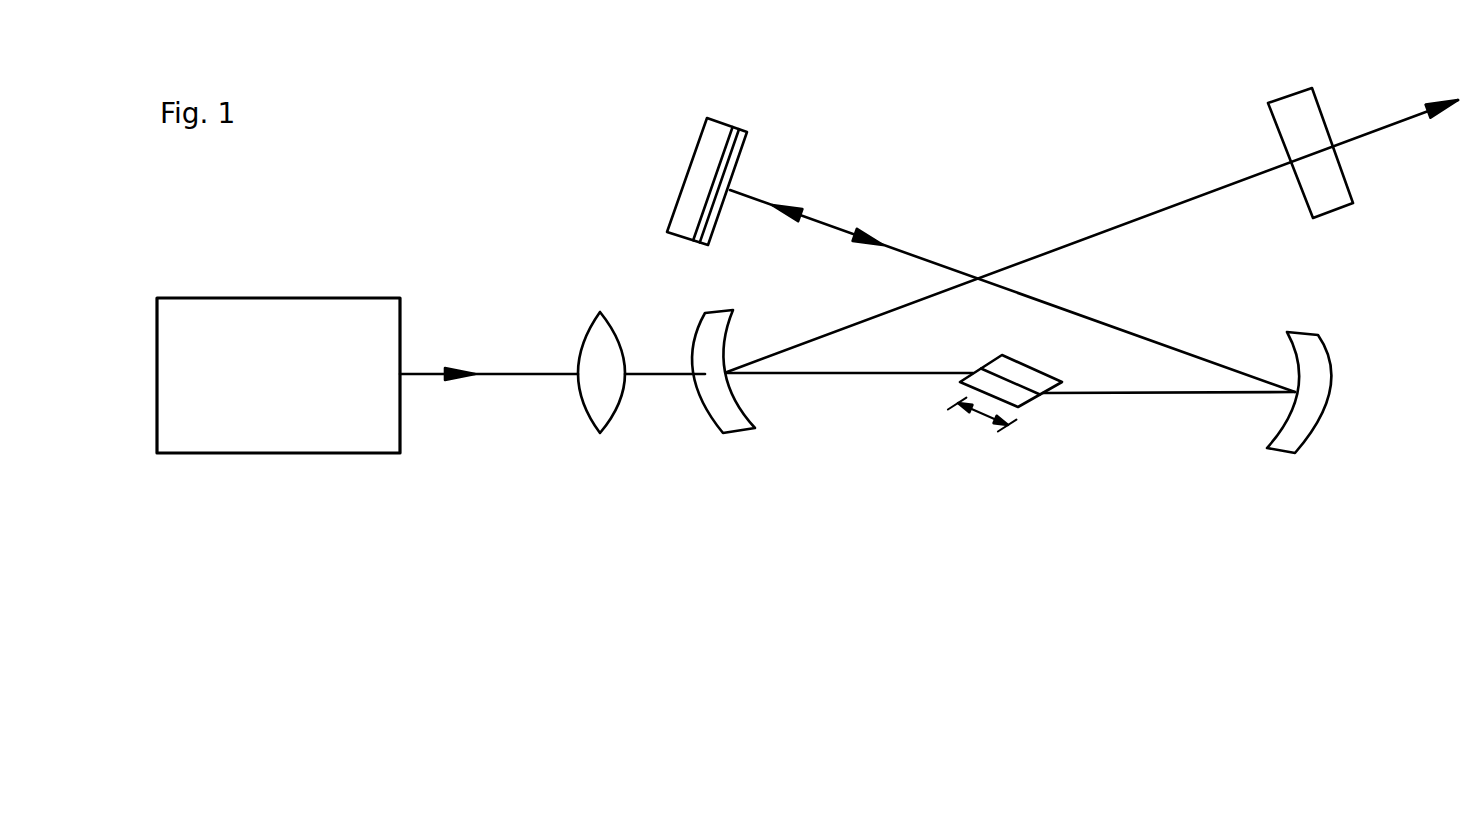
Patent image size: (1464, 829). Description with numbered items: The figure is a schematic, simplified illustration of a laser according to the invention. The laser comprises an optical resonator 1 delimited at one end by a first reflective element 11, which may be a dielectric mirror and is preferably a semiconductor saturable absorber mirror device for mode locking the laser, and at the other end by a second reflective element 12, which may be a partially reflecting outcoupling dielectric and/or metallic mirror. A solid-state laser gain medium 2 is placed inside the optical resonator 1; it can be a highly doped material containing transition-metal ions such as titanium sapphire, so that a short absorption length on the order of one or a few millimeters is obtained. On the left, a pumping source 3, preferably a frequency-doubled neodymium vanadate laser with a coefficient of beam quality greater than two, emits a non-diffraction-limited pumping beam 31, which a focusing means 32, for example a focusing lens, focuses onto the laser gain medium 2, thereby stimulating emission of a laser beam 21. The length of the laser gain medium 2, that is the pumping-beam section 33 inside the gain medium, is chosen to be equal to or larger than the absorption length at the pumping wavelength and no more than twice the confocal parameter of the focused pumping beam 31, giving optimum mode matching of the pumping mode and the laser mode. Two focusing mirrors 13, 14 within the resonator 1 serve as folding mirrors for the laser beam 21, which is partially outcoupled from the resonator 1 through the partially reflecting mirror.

The optical resonator 1 is at (1025, 143).
The solid-state laser gain medium 2 is at (1018, 397).
The pumping source 3 is at (276, 437).
The first reflective element 11 is at (717, 130).
The second reflective element 12 is at (1292, 110).
The focusing mirror 13 is at (737, 418).
The focusing mirror 14 is at (1283, 442).
The laser beam 21 is at (834, 229).
The pumping beam 31 is at (508, 377).
The focusing means 32 is at (600, 416).
The pumping-beam section 33 is at (1027, 372).